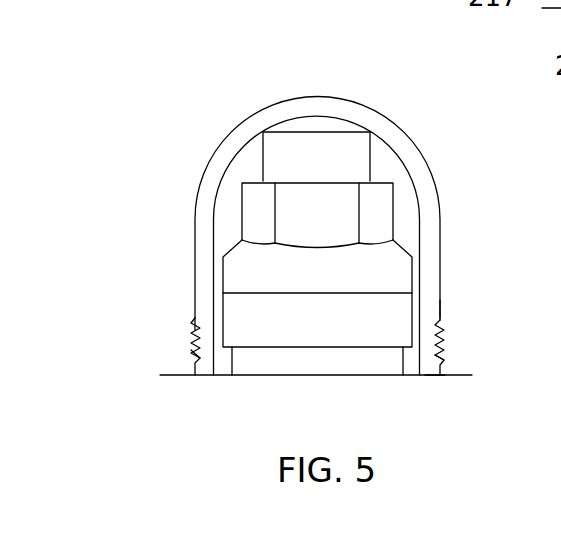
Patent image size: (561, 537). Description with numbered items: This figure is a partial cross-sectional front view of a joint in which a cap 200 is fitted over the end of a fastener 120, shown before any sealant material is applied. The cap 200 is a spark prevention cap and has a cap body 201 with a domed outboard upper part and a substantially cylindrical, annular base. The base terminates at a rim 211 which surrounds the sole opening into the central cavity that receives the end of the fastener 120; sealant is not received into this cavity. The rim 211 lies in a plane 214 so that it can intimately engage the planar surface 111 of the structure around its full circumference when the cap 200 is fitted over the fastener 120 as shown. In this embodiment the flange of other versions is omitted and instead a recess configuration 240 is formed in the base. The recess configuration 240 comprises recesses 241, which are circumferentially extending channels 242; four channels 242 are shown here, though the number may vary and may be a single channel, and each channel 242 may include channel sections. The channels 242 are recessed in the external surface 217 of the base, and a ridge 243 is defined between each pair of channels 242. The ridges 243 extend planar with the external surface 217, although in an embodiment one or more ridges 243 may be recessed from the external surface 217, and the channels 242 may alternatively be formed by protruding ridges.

The cap 200 is at (238, 106).
The cap body 201 is at (423, 182).
The fastener 120 is at (400, 268).
The external surface 217 is at (440, 312).
The ridge 243 is at (437, 328).
The channel 242 is at (438, 357).
The recess 241 is at (193, 355).
The recess configuration 240 is at (141, 329).
The planar surface 111 is at (279, 377).
The rim 211 is at (431, 377).
The plane 214 is at (560, 8).